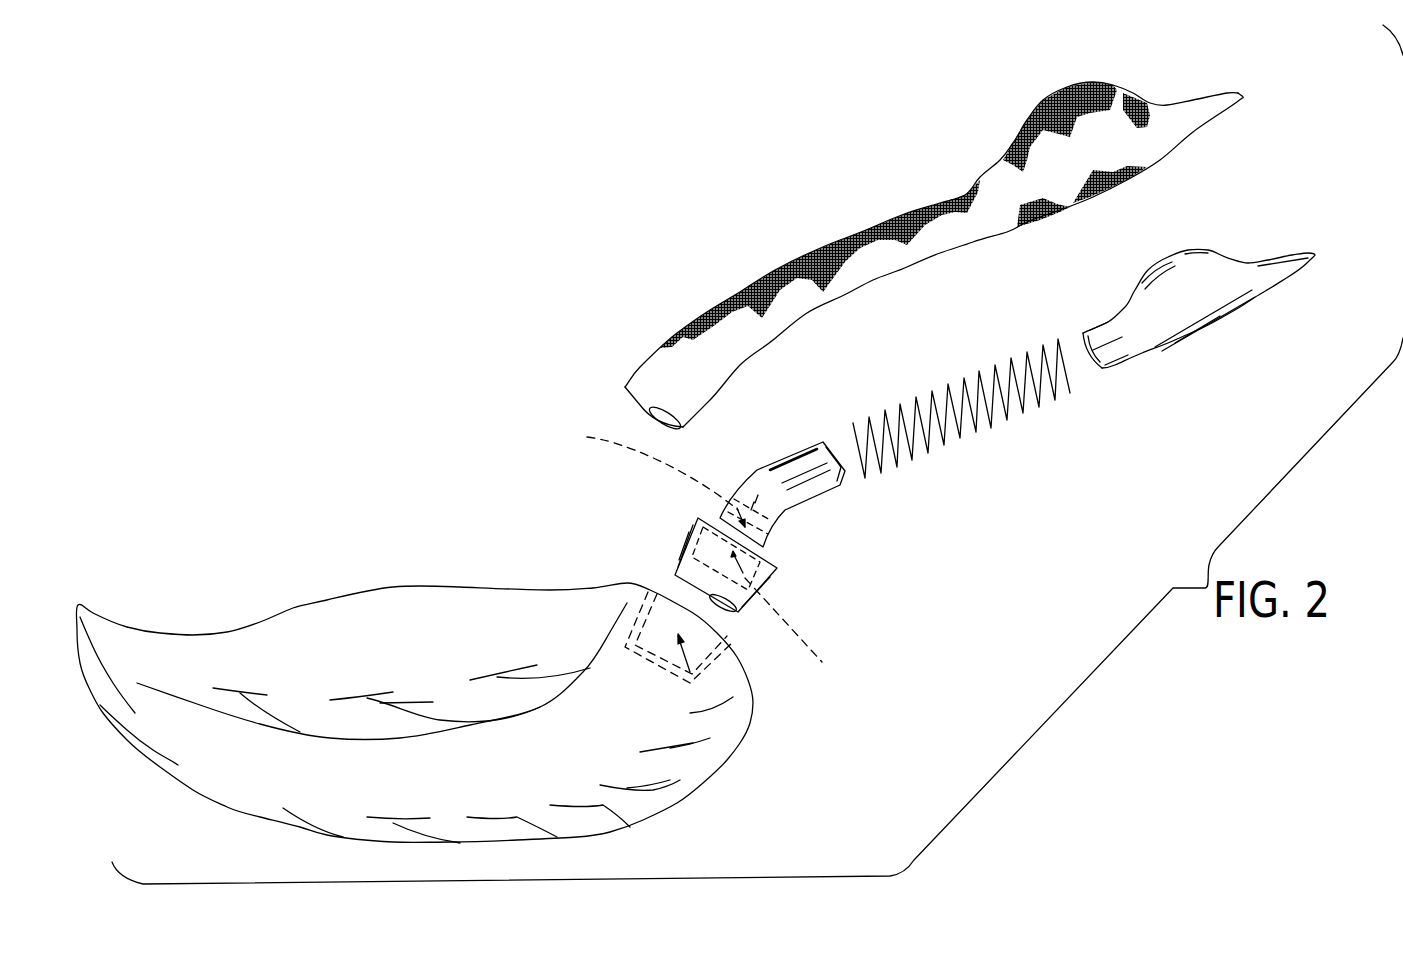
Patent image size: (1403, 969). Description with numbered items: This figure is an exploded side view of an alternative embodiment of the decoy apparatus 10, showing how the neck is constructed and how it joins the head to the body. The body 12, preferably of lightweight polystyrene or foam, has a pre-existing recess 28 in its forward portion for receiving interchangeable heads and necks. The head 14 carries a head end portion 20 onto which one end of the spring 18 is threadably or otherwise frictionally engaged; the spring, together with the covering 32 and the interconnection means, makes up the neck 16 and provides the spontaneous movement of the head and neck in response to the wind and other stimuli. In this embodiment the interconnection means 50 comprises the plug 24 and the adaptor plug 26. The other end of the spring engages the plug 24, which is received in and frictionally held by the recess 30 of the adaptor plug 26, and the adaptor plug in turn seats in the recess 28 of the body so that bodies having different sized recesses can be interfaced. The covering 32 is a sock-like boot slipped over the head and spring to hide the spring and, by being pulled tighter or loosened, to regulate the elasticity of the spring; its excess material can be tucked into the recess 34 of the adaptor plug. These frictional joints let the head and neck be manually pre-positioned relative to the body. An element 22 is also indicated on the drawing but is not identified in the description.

The decoy assembly 10 is at (612, 228).
The body 12 is at (343, 660).
The head 14 is at (1218, 341).
The neck 16 is at (999, 519).
The spring 18 is at (998, 438).
The head end portion 20 is at (1122, 382).
The elbow connector 22 is at (825, 446).
The plug 24 is at (803, 485).
The adaptor plug 26 is at (688, 575).
The recess 28 is at (690, 683).
The recess 30 is at (800, 630).
The covering 32 is at (730, 327).
The recess 34 is at (642, 465).
The interconnection means 50 is at (767, 568).